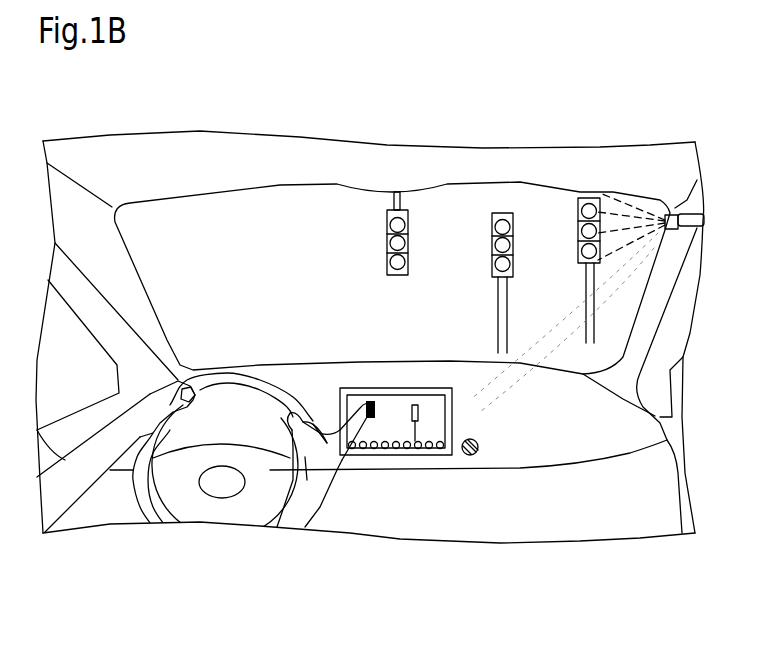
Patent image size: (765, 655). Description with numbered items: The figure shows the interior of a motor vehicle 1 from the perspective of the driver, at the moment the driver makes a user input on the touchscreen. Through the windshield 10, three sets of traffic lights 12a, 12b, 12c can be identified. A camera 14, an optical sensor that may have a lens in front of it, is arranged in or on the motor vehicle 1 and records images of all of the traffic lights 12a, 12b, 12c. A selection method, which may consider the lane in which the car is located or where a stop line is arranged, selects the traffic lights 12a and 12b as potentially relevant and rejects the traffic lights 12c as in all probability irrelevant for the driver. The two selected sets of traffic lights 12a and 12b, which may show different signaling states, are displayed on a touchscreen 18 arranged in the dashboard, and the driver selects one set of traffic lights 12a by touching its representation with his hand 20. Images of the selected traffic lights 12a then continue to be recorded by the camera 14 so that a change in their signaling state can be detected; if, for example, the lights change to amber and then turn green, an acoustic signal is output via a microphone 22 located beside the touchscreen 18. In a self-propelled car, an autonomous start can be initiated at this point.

The motor vehicle 1 is at (517, 518).
The windshield 10 is at (313, 217).
The traffic lights 12a is at (393, 210).
The traffic lights 12b is at (490, 213).
The traffic lights 12c is at (583, 201).
The camera 14 is at (667, 212).
The touchscreen 18 is at (435, 456).
The hand 20 is at (340, 430).
The microphone 22 is at (479, 448).